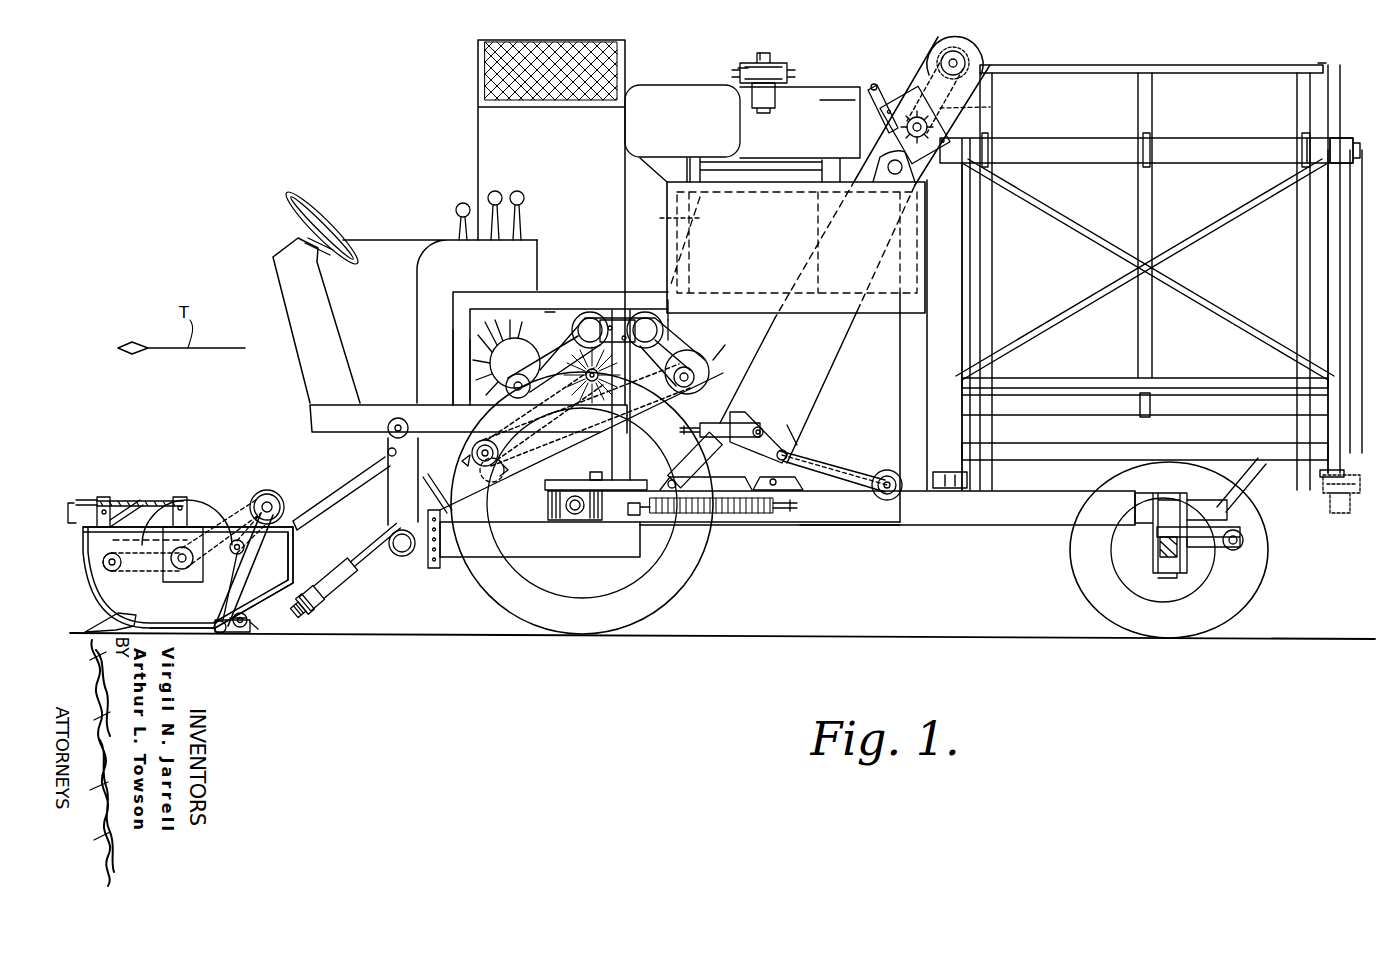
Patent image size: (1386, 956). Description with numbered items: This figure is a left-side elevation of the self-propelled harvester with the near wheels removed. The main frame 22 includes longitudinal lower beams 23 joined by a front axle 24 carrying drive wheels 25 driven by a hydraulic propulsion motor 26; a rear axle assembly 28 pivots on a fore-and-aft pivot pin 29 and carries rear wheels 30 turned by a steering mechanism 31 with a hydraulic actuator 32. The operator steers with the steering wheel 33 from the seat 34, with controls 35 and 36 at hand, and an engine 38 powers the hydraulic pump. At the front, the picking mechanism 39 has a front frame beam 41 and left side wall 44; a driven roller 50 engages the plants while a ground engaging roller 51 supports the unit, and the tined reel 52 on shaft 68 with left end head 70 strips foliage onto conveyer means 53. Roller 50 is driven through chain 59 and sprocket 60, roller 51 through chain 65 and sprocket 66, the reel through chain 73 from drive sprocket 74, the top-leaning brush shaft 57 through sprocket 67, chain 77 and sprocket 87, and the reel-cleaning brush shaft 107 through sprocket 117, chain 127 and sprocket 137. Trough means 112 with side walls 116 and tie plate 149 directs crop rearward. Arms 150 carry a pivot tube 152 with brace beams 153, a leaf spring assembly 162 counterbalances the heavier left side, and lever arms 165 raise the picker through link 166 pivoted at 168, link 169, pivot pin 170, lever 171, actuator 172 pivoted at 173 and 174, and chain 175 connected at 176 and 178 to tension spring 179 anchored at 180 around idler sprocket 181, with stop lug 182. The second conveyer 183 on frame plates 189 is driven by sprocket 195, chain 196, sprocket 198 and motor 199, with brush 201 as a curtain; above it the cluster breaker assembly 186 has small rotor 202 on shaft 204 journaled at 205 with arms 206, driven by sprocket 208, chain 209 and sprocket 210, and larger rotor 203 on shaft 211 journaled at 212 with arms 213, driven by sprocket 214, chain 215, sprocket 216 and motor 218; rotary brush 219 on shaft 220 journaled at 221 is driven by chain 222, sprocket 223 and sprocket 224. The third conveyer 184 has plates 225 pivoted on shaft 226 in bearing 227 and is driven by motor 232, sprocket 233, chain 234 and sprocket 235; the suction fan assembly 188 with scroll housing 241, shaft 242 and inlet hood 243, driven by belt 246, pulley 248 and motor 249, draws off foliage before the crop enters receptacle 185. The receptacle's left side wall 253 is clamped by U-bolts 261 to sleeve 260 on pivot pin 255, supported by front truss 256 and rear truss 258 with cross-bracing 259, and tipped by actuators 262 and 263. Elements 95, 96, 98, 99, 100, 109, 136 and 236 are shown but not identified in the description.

The main frame 22 is at (904, 534).
The longitudinal lower beams 23 is at (845, 526).
The transverse front axle 24 is at (576, 521).
The drive wheel 25 is at (665, 605).
The hydraulic propulsion motor 26 is at (748, 484).
The rear axle assembly 28 is at (1138, 556).
The pivot pin 29 is at (1206, 505).
The rear wheel 30 is at (1228, 612).
The steering mechanism 31 is at (1238, 527).
The piston and cylinder type actuator 32 is at (1244, 541).
The steering wheel 33 is at (289, 188).
The seat 34 is at (550, 257).
The controls 35 is at (512, 191).
The controls 36 is at (460, 202).
The engine 38 is at (552, 204).
The picking mechanism 39 is at (161, 474).
The front frame beam 41 is at (302, 616).
The left front side wall 44 is at (168, 619).
The plant engaging roller 50 is at (219, 634).
The ground engaging roller 51 is at (250, 632).
The tined reel 52 is at (212, 498).
The conveyer means 53 is at (333, 481).
The brush shaft 57 is at (102, 568).
The chain 59 is at (244, 582).
The driven sprocket gear 60 is at (231, 632).
The endless sprocket chain 65 is at (244, 632).
The driven sprocket gear 66 is at (243, 614).
The driven sprocket gear 67 is at (134, 571).
The reel shaft 68 is at (181, 570).
The left end head 70 is at (196, 504).
The endless sprocket chain 73 is at (240, 500).
The drive sprocket gear 74 is at (270, 492).
The sprocket chain 77 is at (160, 572).
The drive sprocket gear 87 is at (179, 614).
The bracket 95 is at (172, 518).
The rod 96 is at (123, 498).
The hook 98 is at (70, 502).
The link 99 is at (84, 498).
The bracket 100 is at (102, 498).
The brush shaft 107 is at (234, 554).
The skid shoe 109 is at (104, 612).
The trough means 112 is at (304, 512).
The side wall 116 is at (294, 549).
The driven sprocket gear 117 is at (212, 587).
The sprocket chain 127 is at (215, 540).
The hydraulic cylinder 136 is at (340, 588).
The drive sprocket gear 137 is at (147, 541).
The tie plate 149 is at (386, 458).
The forwardly projecting arms 150 is at (430, 570).
The pivot tube 152 is at (398, 560).
The brace beams 153 is at (366, 586).
The leaf spring assembly 162 is at (316, 619).
The lever arm 165 is at (386, 432).
The link 166 is at (790, 470).
The pivot 168 is at (772, 485).
The link 169 is at (680, 418).
The pivot pin 170 is at (762, 425).
The lever 171 is at (770, 434).
The hydraulic actuator 172 is at (685, 458).
The pivot 173 is at (668, 478).
The pivot 174 is at (745, 402).
The sprocket chain 175 is at (852, 455).
The pivotal connection 176 is at (788, 453).
The connection 178 is at (782, 508).
The tension coil spring 179 is at (697, 515).
The spring anchorage 180 is at (632, 518).
The idler sprocket gear 181 is at (874, 490).
The lug 182 is at (765, 428).
The second conveyer means 183 is at (718, 357).
The third conveyer means 184 is at (978, 30).
The receptacle 185 is at (1241, 62).
The cluster breaker assembly 186 is at (452, 344).
The suction fan assembly 188 is at (816, 80).
The frame plates 189 is at (705, 358).
The driven sprocket gear 195 is at (716, 342).
The sprocket chain 196 is at (671, 328).
The drive sprocket gear 198 is at (670, 306).
The hydraulic motor 199 is at (657, 316).
The brush 201 is at (453, 461).
The front small rotor 202 is at (480, 474).
The rear larger rotor 203 is at (470, 371).
The shaft 204 is at (472, 450).
The journal 205 is at (573, 443).
The plate arms 206 is at (506, 472).
The driven sprocket gear 208 is at (505, 450).
The sprocket chain 209 is at (700, 380).
The drive sprocket gear 210 is at (705, 377).
The shaft 211 is at (512, 363).
The journal 212 is at (470, 396).
The plate arms 213 is at (494, 330).
The driven sprocket gear 214 is at (530, 338).
The sprocket chain 215 is at (566, 312).
The drive sprocket gear 216 is at (567, 314).
The hydraulic motor 218 is at (590, 320).
The rotary brush 219 is at (545, 414).
The brush shaft 220 is at (602, 320).
The journal 221 is at (670, 348).
The sprocket chain 222 is at (586, 370).
The driven sprocket gear 223 is at (570, 388).
The drive sprocket gear 224 is at (508, 398).
The vertical plates 225 is at (941, 26).
The shaft 226 is at (896, 176).
The bearing 227 is at (911, 160).
The hydraulic motor 232 is at (940, 124).
The drive sprocket gear 233 is at (990, 107).
The sprocket chain 234 is at (960, 90).
The driven sprocket gear 235 is at (972, 50).
The lever 236 is at (893, 86).
The scroll housing 241 is at (858, 90).
The vertical shaft 242 is at (764, 52).
The inlet hood 243 is at (664, 217).
The endless belt 246 is at (774, 65).
The drive pulley 248 is at (746, 66).
The hydraulic motor 249 is at (775, 103).
The left side wall 253 is at (1104, 202).
The pivot pin 255 is at (1340, 146).
The front truss 256 is at (979, 290).
The rear truss 258 is at (1314, 292).
The cross-bracing members 259 is at (1135, 298).
The sleeve 260 is at (1100, 140).
The U-bolts 261 is at (993, 151).
The front actuator 262 is at (900, 460).
The rear actuator 263 is at (1352, 497).